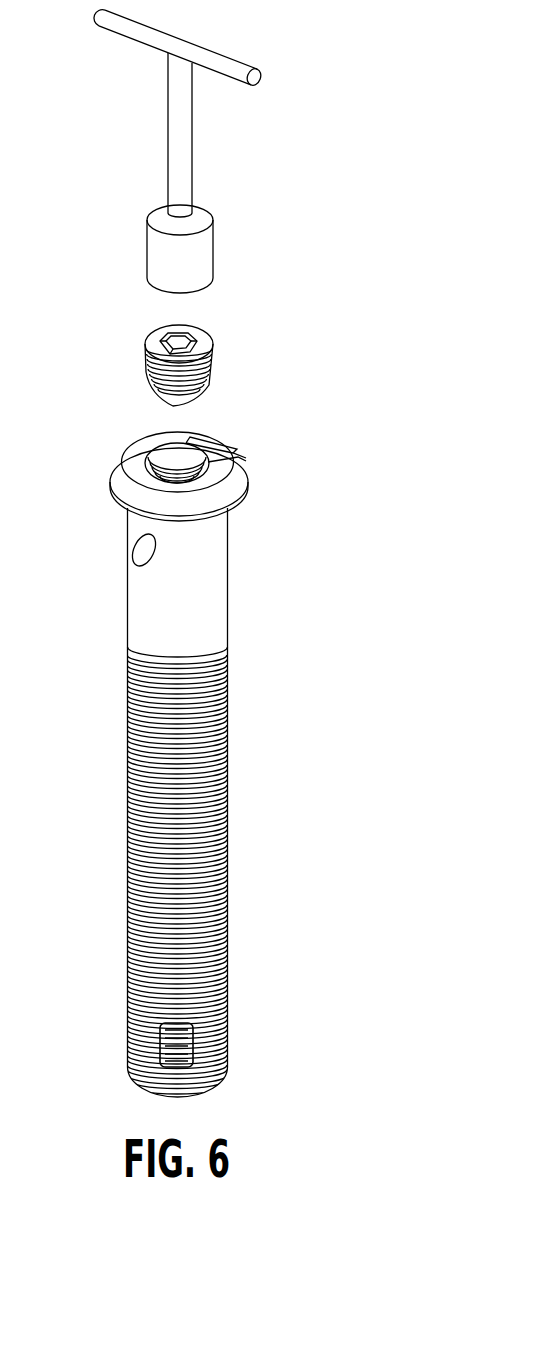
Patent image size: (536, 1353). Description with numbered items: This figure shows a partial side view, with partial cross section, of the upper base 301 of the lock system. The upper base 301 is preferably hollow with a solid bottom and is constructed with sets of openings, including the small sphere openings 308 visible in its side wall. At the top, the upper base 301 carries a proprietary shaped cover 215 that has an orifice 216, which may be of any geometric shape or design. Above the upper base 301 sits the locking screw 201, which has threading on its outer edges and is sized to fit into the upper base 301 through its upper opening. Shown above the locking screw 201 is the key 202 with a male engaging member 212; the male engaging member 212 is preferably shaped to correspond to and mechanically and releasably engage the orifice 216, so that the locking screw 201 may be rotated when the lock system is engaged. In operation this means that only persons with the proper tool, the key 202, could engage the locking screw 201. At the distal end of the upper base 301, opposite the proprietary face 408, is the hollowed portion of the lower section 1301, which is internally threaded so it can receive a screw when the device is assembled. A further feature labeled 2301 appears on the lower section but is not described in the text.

The key 202 is at (240, 236).
The male engaging member 212 is at (147, 250).
The locking screw 201 is at (214, 363).
The proprietary face 408 is at (170, 437).
The cover 215 is at (145, 457).
The orifice 216 is at (246, 458).
The small sphere openings 308 is at (140, 549).
The upper base 301 is at (132, 618).
The hollowed portion of the lower section 1301 is at (230, 783).
The window 2301 is at (135, 1072).